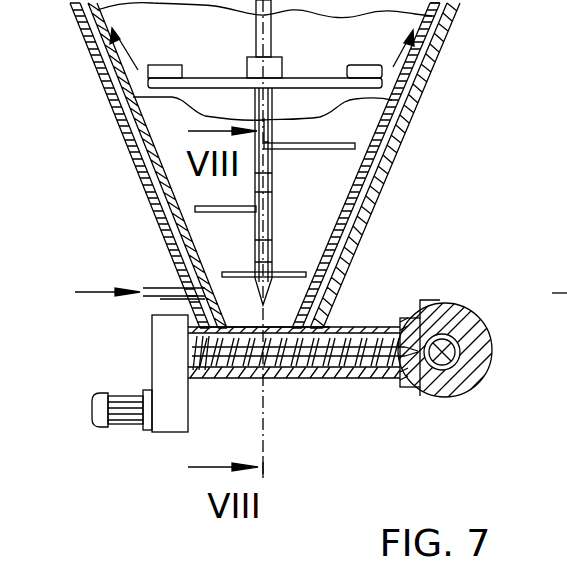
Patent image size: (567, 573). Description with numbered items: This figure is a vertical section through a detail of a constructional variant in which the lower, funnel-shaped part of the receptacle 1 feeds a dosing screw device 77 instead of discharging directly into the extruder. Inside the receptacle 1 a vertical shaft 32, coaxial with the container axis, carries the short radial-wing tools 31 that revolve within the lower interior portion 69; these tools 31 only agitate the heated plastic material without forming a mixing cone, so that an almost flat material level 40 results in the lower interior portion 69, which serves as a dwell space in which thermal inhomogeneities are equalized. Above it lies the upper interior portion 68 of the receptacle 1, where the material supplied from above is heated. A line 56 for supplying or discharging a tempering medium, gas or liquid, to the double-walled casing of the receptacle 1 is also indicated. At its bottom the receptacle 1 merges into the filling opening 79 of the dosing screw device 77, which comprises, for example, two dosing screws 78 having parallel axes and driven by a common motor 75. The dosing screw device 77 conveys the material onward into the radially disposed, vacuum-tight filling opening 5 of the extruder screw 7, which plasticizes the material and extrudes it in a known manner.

The receptacle 1 is at (404, 194).
The filling opening 5 is at (420, 300).
The extruder screw 7 is at (422, 390).
The tools 31 is at (285, 148).
The vertical shaft 32 is at (272, 222).
The material level 40 is at (397, 123).
The line 56 is at (167, 288).
The upper interior portion 68 is at (197, 47).
The lower interior portion 69 is at (205, 192).
The common motor 75 is at (122, 393).
The dosing screw device 77 is at (307, 367).
The dosing screws 78 is at (385, 320).
The filling opening 79 is at (262, 326).